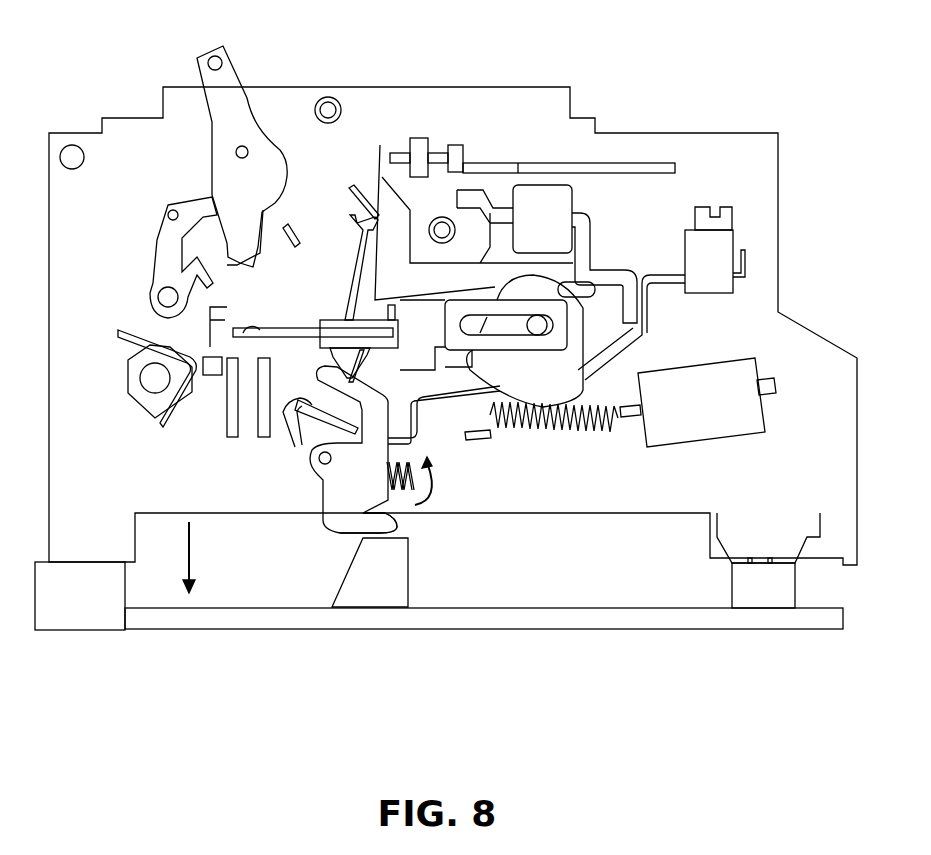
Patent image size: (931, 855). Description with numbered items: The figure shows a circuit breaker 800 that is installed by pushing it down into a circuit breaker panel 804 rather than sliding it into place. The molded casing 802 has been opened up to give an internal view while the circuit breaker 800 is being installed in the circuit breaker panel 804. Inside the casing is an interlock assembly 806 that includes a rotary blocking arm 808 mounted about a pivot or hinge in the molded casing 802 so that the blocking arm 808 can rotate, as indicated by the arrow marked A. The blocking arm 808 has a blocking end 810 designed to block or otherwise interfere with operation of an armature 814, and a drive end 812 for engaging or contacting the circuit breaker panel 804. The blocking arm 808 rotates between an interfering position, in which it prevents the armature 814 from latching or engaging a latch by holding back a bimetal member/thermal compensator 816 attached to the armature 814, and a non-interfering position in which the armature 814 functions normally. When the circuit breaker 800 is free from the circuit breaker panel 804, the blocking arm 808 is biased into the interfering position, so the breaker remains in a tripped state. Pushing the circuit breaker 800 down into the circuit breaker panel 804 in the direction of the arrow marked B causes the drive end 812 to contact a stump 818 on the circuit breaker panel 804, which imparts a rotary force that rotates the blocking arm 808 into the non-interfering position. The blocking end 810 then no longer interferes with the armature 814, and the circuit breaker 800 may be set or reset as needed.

The circuit breaker 800 is at (775, 75).
The molded casing 802 is at (523, 85).
The circuit breaker panel 804 is at (167, 630).
The interlock assembly 806 is at (313, 497).
The rotary blocking arm 808 is at (405, 480).
The blocking end 810 is at (336, 380).
The drive end 812 is at (390, 530).
The armature 814 is at (352, 257).
The bimetal member/thermal compensator 816 is at (368, 372).
The stump 818 is at (410, 573).